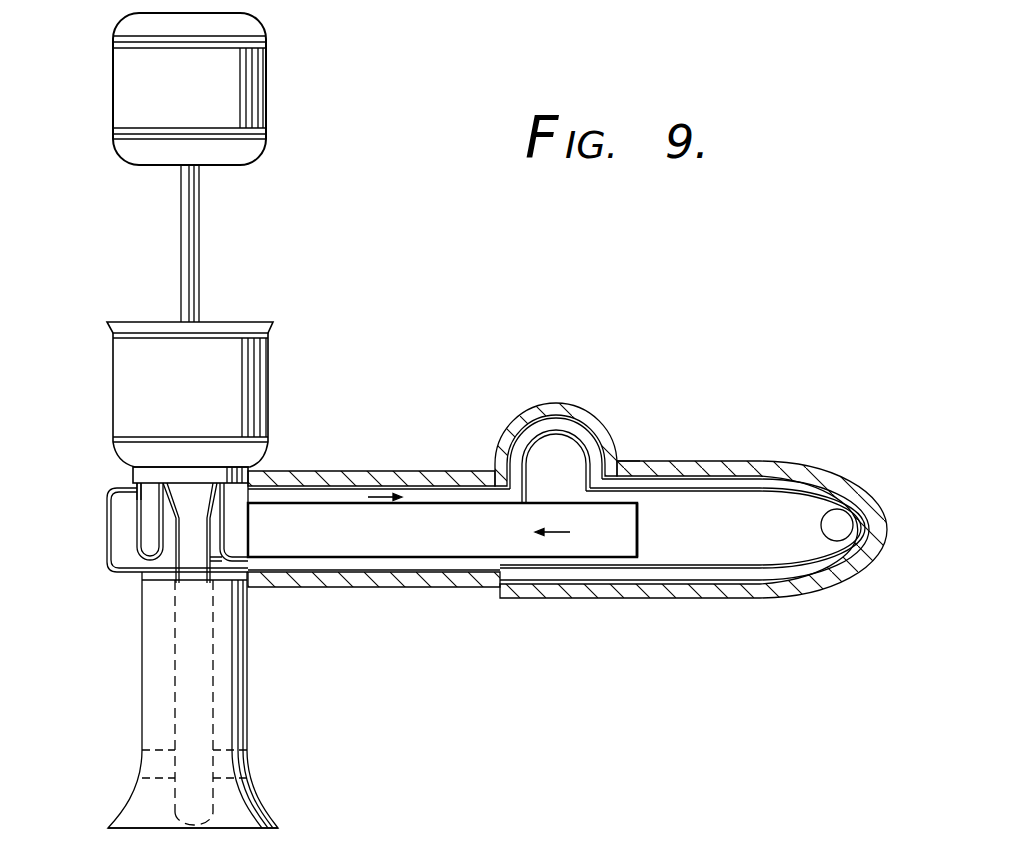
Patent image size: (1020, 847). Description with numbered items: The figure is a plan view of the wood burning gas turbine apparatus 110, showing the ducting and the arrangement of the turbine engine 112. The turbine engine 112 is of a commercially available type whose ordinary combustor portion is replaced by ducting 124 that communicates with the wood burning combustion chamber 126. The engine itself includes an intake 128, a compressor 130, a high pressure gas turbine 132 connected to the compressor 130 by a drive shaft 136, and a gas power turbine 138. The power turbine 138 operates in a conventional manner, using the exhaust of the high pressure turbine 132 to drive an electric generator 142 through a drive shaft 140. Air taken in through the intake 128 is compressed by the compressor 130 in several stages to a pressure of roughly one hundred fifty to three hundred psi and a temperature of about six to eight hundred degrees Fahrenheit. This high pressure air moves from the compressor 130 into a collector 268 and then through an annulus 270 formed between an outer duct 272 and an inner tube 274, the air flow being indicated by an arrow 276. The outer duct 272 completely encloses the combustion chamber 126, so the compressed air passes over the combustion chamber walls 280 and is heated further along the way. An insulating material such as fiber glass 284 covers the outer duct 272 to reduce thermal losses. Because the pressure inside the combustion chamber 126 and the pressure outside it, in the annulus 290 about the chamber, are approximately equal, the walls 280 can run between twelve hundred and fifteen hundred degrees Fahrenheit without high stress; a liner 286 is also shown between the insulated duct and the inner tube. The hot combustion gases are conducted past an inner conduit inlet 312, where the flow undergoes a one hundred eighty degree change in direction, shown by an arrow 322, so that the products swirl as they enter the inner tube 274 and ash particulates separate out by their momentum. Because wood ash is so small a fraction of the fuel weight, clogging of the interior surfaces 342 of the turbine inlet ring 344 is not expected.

The wood burning gas turbine apparatus 110 is at (640, 378).
The turbine engine 112 is at (113, 390).
The ducting 124 is at (322, 484).
The combustion chamber 126 is at (553, 452).
The intake 128 is at (262, 798).
The compressor 130 is at (247, 666).
The high pressure gas turbine 132 is at (250, 478).
The drive shaft 136 is at (188, 578).
The gas power turbine 138 is at (270, 382).
The drive shaft 140 is at (199, 256).
The electric generator 142 is at (268, 100).
The collector 268 is at (107, 550).
The annulus 270 is at (450, 500).
The outer duct 272 is at (305, 580).
The inner tube 274 is at (447, 580).
The arrow 276 is at (384, 494).
The combustion chamber walls 280 is at (518, 447).
The fiber glass 284 is at (680, 462).
The liner 286 is at (603, 452).
The annulus 290 is at (587, 437).
The inner conduit inlet 312 is at (640, 522).
The arrow 322 is at (566, 534).
The interior surfaces 342 is at (145, 523).
The turbine inlet ring 344 is at (137, 505).